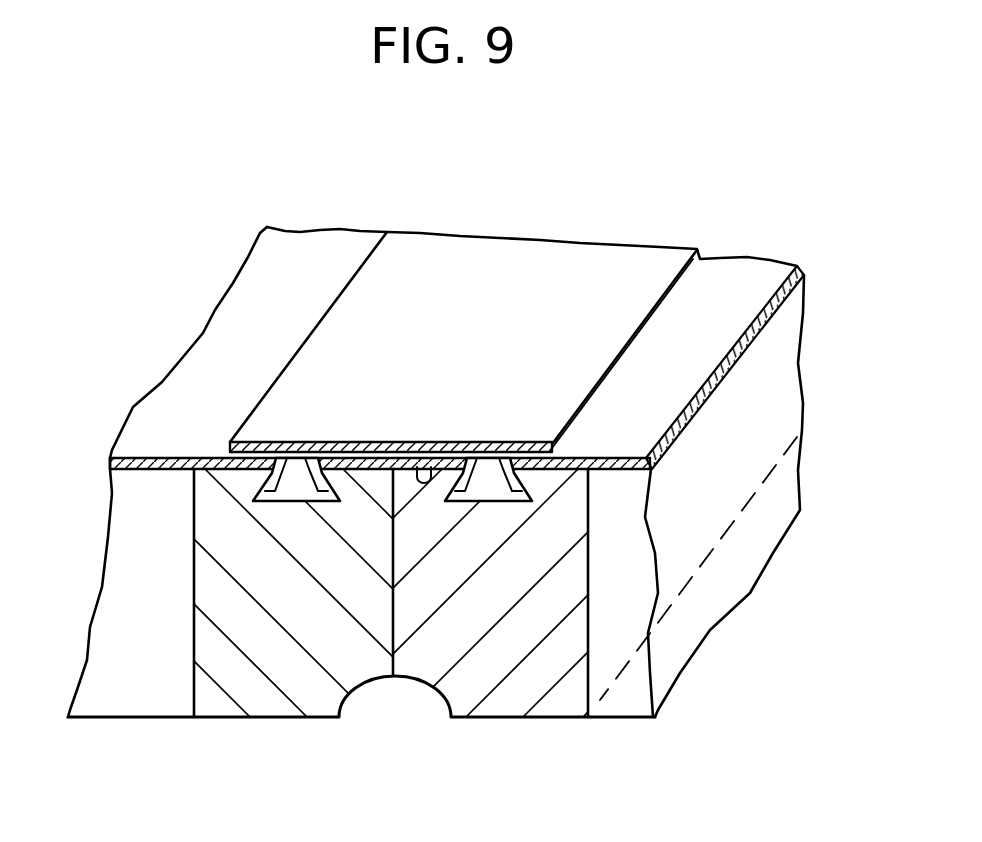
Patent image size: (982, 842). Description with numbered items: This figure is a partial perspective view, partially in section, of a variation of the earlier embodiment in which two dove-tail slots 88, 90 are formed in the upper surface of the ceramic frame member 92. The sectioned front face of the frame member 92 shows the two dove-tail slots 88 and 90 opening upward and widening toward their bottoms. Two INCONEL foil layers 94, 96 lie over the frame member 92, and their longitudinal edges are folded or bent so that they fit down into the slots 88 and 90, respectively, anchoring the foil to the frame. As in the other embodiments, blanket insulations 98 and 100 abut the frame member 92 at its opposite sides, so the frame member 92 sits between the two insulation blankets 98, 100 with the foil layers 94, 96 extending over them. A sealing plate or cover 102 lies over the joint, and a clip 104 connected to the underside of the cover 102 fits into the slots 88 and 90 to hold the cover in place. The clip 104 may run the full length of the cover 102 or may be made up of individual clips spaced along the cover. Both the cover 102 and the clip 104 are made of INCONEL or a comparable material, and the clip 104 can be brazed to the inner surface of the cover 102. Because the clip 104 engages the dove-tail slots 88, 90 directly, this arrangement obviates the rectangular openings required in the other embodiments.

The dove-tail slot 88 is at (296, 501).
The dove-tail slot 90 is at (494, 501).
The ceramic frame member 92 is at (537, 724).
The INCONEL foil layer 94 is at (222, 360).
The INCONEL foil layer 96 is at (673, 372).
The blanket insulation 98 is at (150, 546).
The blanket insulation 100 is at (613, 612).
The sealing plate or cover 102 is at (375, 290).
The clip 104 is at (427, 466).